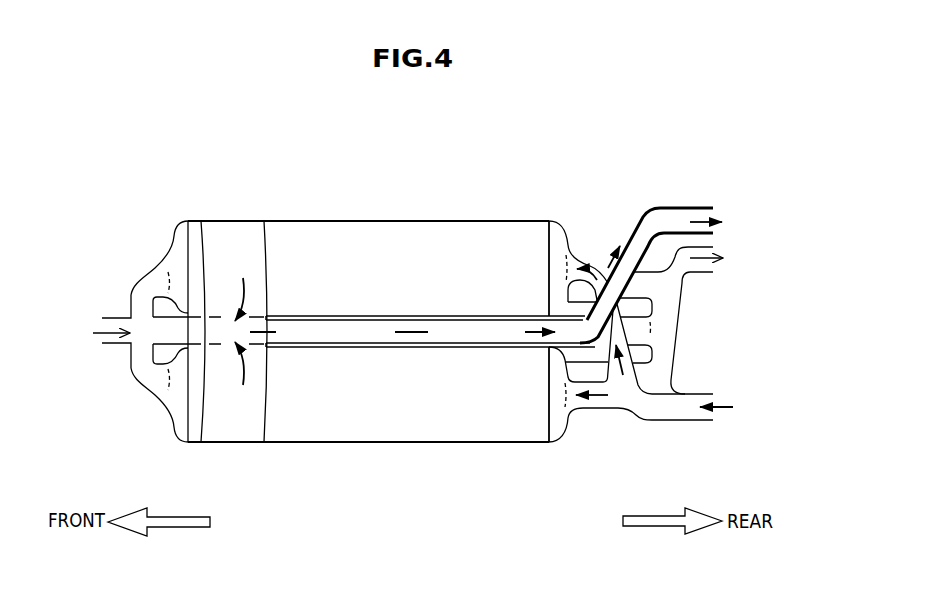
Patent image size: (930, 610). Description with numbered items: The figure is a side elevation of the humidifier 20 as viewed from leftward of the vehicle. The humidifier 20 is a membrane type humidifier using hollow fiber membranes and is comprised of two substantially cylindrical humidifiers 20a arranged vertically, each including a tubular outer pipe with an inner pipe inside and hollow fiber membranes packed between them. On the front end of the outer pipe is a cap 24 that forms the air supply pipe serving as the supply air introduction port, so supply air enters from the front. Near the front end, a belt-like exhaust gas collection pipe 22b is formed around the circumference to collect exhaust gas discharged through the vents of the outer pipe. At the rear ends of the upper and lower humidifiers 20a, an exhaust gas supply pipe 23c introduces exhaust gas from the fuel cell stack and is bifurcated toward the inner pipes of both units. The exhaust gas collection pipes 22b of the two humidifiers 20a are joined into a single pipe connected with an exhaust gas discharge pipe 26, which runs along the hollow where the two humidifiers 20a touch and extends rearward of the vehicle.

The humidifier 20 is at (417, 321).
The humidifier 20a is at (436, 221).
The exhaust gas collection pipe 22b is at (228, 220).
The exhaust gas supply pipe 23c is at (668, 422).
The cap 24 is at (118, 317).
The exhaust gas discharge pipe 26 is at (667, 206).